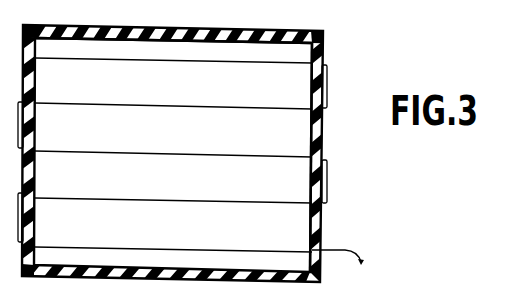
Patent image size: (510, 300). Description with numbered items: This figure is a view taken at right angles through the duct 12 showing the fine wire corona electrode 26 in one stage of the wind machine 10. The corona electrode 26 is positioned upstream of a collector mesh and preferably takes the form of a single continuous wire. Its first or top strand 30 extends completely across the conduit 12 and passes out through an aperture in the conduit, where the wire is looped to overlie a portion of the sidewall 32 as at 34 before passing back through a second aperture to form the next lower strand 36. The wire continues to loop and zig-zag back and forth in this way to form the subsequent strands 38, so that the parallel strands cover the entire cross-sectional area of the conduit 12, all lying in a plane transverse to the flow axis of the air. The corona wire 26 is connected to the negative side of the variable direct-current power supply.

The enclosure assembly 10 is at (259, 27).
The duct 12 is at (67, 29).
The corona wire 26 is at (112, 151).
The top strand 30 is at (207, 62).
The sidewall 32 is at (318, 148).
The loop 34 is at (325, 90).
The next lower strand 36 is at (213, 108).
The subsequent strands 38 is at (146, 247).